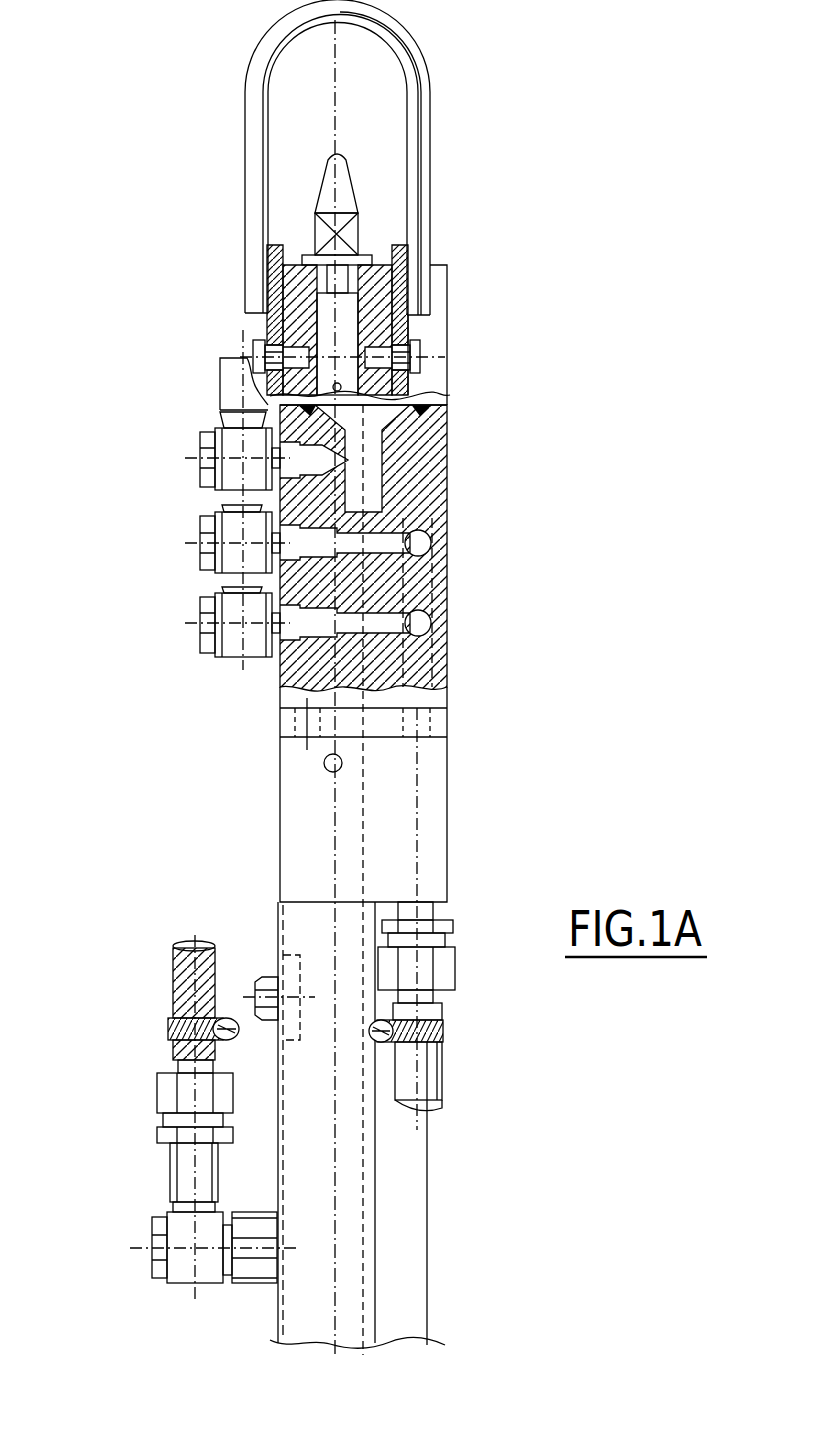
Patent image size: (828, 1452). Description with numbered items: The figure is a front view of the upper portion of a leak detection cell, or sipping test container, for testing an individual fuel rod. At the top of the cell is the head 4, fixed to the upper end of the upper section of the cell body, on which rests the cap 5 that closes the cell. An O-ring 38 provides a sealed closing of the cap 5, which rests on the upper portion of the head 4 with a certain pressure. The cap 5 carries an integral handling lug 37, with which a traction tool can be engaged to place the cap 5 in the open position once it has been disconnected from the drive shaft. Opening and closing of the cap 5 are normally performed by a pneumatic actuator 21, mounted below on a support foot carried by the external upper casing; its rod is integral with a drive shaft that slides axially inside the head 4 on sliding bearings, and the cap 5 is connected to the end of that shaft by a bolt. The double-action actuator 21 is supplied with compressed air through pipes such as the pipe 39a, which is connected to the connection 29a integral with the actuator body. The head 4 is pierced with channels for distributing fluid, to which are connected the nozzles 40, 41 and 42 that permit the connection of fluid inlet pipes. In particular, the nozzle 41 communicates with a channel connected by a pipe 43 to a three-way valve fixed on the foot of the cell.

The handling lug 37 is at (415, 183).
The cap 5 is at (437, 333).
The O-ring 38 is at (267, 405).
The nozzle 40 is at (230, 440).
The nozzle 41 is at (230, 525).
The nozzle 42 is at (233, 638).
The head 4 is at (428, 817).
The pipe 43 is at (433, 1078).
The pipe 39a is at (167, 1093).
The connection 29a is at (250, 1268).
The pneumatic actuator 21 is at (353, 1290).